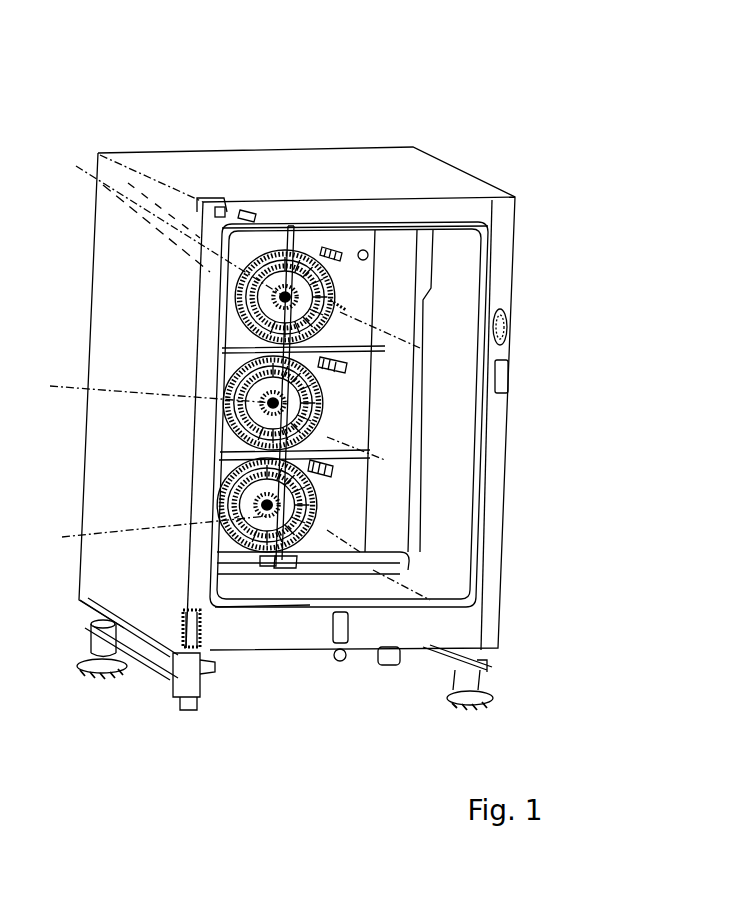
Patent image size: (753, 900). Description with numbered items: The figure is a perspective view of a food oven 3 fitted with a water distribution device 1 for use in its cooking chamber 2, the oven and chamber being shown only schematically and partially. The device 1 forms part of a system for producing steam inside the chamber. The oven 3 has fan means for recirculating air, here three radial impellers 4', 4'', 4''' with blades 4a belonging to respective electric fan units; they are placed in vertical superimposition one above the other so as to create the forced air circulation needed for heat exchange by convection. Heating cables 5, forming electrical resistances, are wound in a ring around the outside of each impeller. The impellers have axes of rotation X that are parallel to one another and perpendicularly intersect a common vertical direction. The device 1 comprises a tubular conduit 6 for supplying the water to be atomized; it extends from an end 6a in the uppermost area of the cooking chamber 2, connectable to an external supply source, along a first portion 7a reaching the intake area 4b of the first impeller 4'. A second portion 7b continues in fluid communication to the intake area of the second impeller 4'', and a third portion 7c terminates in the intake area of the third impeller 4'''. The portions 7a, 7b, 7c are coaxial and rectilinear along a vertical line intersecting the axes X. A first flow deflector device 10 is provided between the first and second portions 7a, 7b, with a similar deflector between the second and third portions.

The water distribution device 1 is at (232, 342).
The cooking chamber 2 is at (439, 553).
The oven 3 is at (552, 120).
The first impeller 4' is at (319, 212).
The second impeller 4'' is at (391, 368).
The third impeller 4''' is at (389, 505).
The blades 4a is at (296, 568).
The intake area 4b is at (330, 322).
The heating cables 5 is at (338, 305).
The tubular conduit 6 is at (303, 200).
The end of conduit 6a is at (247, 212).
The first portion of conduit 7a is at (230, 258).
The second portion of conduit 7b is at (236, 352).
The third portion of conduit 7c is at (218, 470).
The first flow deflector device 10 is at (207, 255).
The axes of rotation X is at (224, 348).